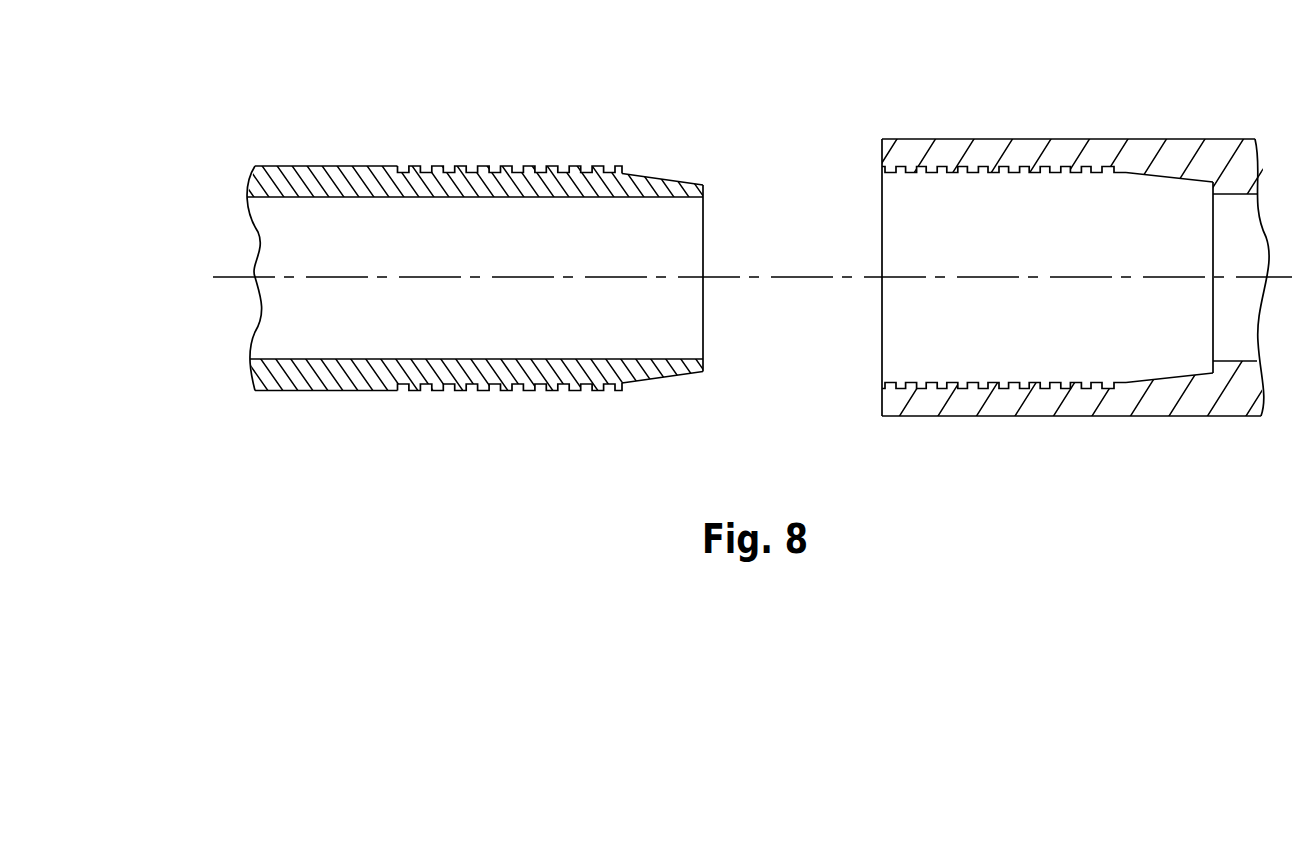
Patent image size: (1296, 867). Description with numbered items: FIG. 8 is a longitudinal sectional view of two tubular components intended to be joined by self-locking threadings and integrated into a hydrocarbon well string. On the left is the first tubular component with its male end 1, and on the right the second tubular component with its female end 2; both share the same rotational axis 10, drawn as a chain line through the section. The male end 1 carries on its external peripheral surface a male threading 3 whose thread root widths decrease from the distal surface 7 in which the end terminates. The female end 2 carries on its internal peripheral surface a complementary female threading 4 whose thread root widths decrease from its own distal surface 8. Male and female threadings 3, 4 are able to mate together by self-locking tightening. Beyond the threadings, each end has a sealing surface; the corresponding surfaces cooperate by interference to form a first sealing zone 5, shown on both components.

The male end 1 is at (474, 232).
The female end 2 is at (1057, 240).
The male threading 3 is at (534, 156).
The female threading 4 is at (1007, 190).
The first sealing zone 5 is at (652, 163).
The distal surface 7 is at (703, 189).
The distal surface 8 is at (882, 154).
The rotational axis 10 is at (740, 277).